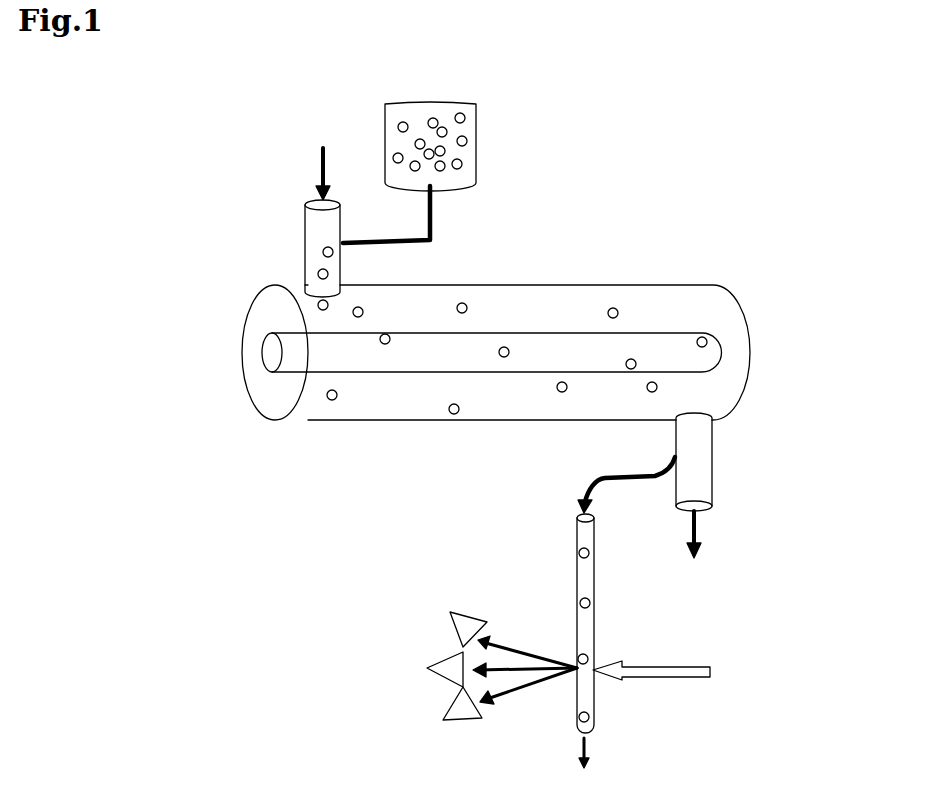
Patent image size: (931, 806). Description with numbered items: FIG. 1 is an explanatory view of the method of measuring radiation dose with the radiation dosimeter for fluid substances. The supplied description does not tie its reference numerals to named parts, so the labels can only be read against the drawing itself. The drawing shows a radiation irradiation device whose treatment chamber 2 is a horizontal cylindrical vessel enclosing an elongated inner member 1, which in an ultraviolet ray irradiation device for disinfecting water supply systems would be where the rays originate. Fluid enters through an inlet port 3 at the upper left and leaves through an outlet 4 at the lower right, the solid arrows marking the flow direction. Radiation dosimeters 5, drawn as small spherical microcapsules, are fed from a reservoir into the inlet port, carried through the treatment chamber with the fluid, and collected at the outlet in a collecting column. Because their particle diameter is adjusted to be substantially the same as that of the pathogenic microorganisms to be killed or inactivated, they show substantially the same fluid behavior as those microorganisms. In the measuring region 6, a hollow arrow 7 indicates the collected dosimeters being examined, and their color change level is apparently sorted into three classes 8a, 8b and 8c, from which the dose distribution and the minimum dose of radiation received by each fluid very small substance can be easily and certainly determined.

The inner cylinder 1 is at (545, 332).
The outer cylinder (main body) 2 is at (693, 287).
The inlet pipe 3 is at (305, 225).
The outlet pipe 4 is at (712, 487).
The particles 5 is at (405, 124).
The region 6 is at (492, 541).
The flow arrow 7 is at (677, 666).
The spray portion a 8a is at (515, 666).
The spray portion b 8b is at (515, 668).
The spray portion c 8c is at (530, 687).